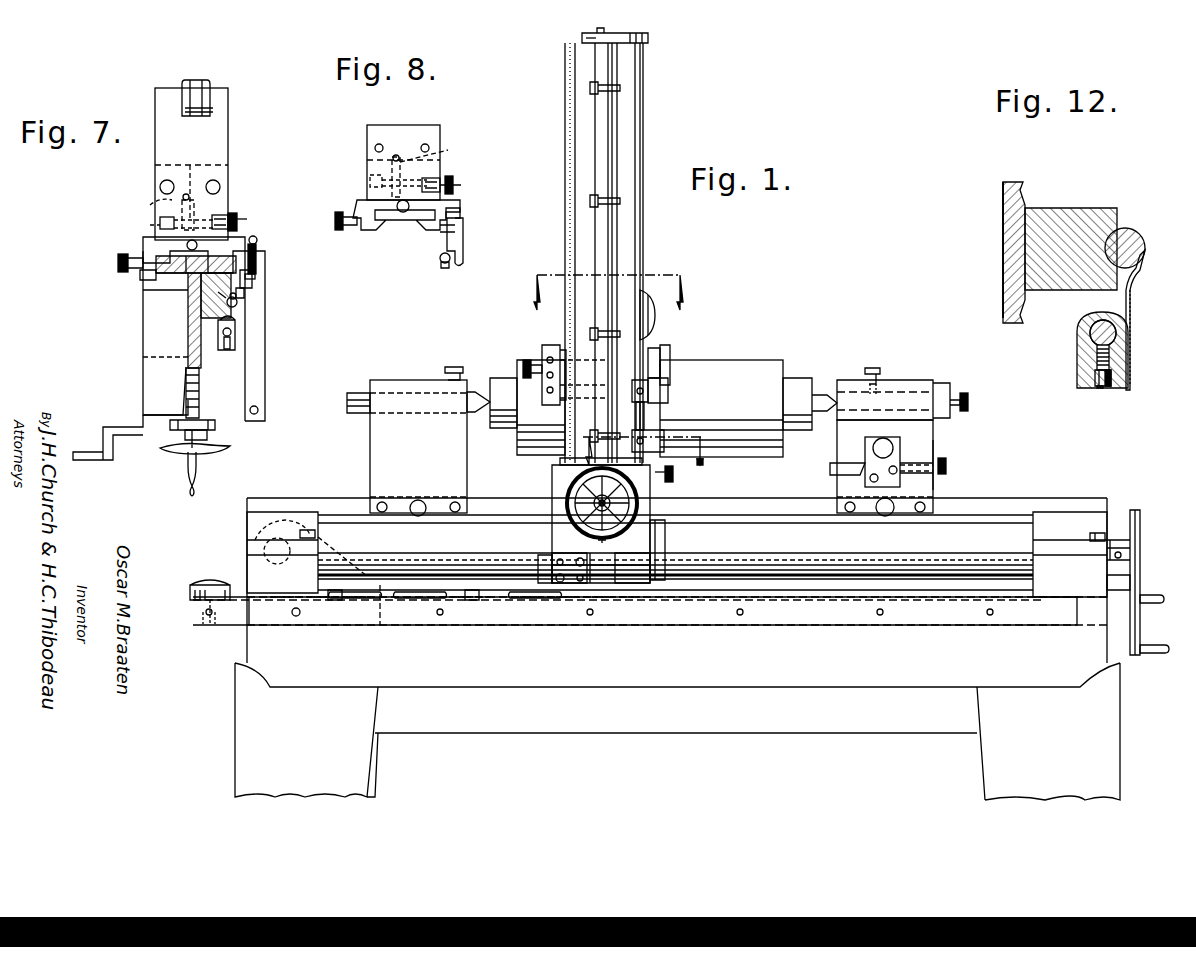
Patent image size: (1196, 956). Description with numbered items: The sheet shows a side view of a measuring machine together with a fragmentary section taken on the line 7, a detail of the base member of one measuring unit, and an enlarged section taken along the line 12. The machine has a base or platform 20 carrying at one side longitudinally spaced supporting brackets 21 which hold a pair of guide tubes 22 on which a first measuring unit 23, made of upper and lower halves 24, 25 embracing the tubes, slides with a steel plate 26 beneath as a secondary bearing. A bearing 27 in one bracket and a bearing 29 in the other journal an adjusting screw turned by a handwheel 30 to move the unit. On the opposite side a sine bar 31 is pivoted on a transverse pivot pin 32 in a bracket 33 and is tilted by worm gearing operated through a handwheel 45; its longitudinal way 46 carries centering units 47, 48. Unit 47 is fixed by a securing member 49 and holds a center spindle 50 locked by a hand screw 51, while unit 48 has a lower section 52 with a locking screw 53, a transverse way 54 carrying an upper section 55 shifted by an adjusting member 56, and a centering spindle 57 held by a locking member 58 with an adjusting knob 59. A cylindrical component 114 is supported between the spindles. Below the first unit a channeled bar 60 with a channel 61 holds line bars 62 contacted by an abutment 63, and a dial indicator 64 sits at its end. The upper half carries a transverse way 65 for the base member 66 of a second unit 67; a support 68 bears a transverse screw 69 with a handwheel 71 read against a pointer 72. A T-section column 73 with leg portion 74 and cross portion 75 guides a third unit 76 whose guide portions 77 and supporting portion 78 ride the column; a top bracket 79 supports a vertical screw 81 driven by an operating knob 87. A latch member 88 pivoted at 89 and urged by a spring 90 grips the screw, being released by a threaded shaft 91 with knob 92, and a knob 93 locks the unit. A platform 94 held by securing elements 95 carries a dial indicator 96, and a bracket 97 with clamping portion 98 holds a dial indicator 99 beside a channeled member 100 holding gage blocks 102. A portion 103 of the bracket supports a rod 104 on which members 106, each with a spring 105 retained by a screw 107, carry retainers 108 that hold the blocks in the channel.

In FIG. 1, the section line 7— 7 is at (607, 281).
In FIG. 1, the section line 12— 12 is at (639, 439).
In FIG. 1, the base or platform 20 is at (1115, 690).
In FIG. 1, the supporting brackets 21 is at (255, 523).
In FIG. 1, the guide members or tubes 22 is at (1043, 575).
In FIG. 7, the first measuring unit 23 is at (267, 387).
In FIG. 1, the first measuring unit 23 is at (630, 580).
In FIG. 1, the upper half of first measuring unit 24 is at (560, 540).
In FIG. 1, the lower half of first measuring unit 25 is at (622, 610).
In FIG. 1, the steel plate 26 is at (995, 600).
In FIG. 1, the bearing 27 is at (1091, 512).
In FIG. 1, the bearing 29 is at (282, 513).
In FIG. 1, the handwheel 30 is at (1140, 522).
In FIG. 1, the sine bar 31 is at (1026, 498).
In FIG. 1, the transverse pivot pin 32 is at (278, 567).
In FIG. 1, the bracket 33 is at (325, 535).
In FIG. 1, the handwheel 45 is at (1152, 627).
In FIG. 1, the longitudinal way 46 is at (1001, 498).
In FIG. 1, the centering unit 47 is at (464, 445).
In FIG. 1, the centering unit 48 is at (837, 483).
In FIG. 1, the securing member 49 is at (418, 505).
In FIG. 1, the center spindle 50 is at (478, 397).
In FIG. 1, the hand screw 51 is at (455, 367).
In FIG. 1, the lower section of centering unit 52 is at (938, 487).
In FIG. 1, the locking screw 53 is at (885, 515).
In FIG. 1, the transverse way 54 is at (833, 462).
In FIG. 1, the upper section of centering unit 55 is at (910, 385).
In FIG. 1, the adjusting member 56 is at (893, 445).
In FIG. 1, the centering spindle 57 is at (820, 397).
In FIG. 1, the locking member 58 is at (874, 367).
In FIG. 1, the adjusting knob 59 is at (970, 399).
In FIG. 1, the bar or member 60 is at (350, 623).
In FIG. 1, the channel 61 is at (418, 610).
In FIG. 1, the line bars 62 is at (433, 592).
In FIG. 7, the abutment or extension 63 is at (125, 458).
In FIG. 1, the abutment or extension 63 is at (510, 607).
In FIG. 1, the dial indicator 64 is at (210, 583).
In FIG. 1, the transverse way 65 is at (575, 505).
In FIG. 1, the base member 66 is at (567, 491).
In FIG. 7, the second measuring unit 67 is at (152, 376).
In FIG. 7, the support or bracket 68 is at (172, 420).
In FIG. 7, the adjusting shaft or screw 69 is at (200, 402).
In FIG. 7, the handwheel 71 is at (220, 451).
In FIG. 1, the handwheel 71 is at (655, 487).
In FIG. 7, the pointer 72 is at (212, 433).
In FIG. 1, the pointer 72 is at (560, 470).
In FIG. 7, the vertical columnar structure 73 is at (187, 338).
In FIG. 1, the vertical columnar structure 73 is at (565, 125).
In FIG. 12, the vertical columnar structure 73 is at (997, 241).
In FIG. 7, the leg portion of column 74 is at (143, 358).
In FIG. 1, the leg portion of column 74 is at (595, 66).
In FIG. 12, the leg portion of column 74 is at (1002, 195).
In FIG. 7, the cross portion of column 75 is at (145, 252).
In FIG. 1, the cross portion of column 75 is at (570, 158).
In FIG. 8, the third measuring unit 76 is at (363, 141).
In FIG. 1, the third measuring unit 76 is at (548, 387).
In FIG. 7, the guide portions 77 is at (138, 275).
In FIG. 8, the guide portions 77 is at (428, 238).
In FIG. 1, the guide portions 77 is at (550, 347).
In FIG. 8, the supporting portion 78 is at (440, 137).
In FIG. 1, the bracket 79 is at (582, 36).
In FIG. 7, the vertical threaded shaft or screw 81 is at (174, 275).
In FIG. 7, the operating knob 87 is at (256, 269).
In FIG. 1, the operating knob 87 is at (673, 473).
In FIG. 7, the latch member 88 is at (150, 207).
In FIG. 8, the latch member 88 is at (437, 149).
In FIG. 7, the pivot 89 is at (190, 186).
In FIG. 8, the pivot 89 is at (396, 157).
In FIG. 7, the compression spring 90 is at (150, 222).
In FIG. 8, the compression spring 90 is at (370, 173).
In FIG. 7, the release member or threaded shaft 91 is at (228, 219).
In FIG. 8, the release member or threaded shaft 91 is at (448, 182).
In FIG. 7, the operating knob 92 is at (237, 220).
In FIG. 8, the operating knob 92 is at (461, 185).
In FIG. 7, the locking knob 93 is at (118, 263).
In FIG. 8, the locking knob 93 is at (338, 216).
In FIG. 1, the locking knob 93 is at (528, 362).
In FIG. 7, the platform 94 is at (223, 88).
In FIG. 7, the securing elements 95 is at (160, 190).
In FIG. 7, the dial indicator 96 is at (199, 78).
In FIG. 7, the supporting bracket 97 is at (256, 247).
In FIG. 8, the supporting bracket 97 is at (463, 208).
In FIG. 1, the supporting bracket 97 is at (655, 348).
In FIG. 7, the clamping portion 98 is at (247, 294).
In FIG. 8, the clamping portion 98 is at (463, 242).
In FIG. 1, the clamping portion 98 is at (668, 355).
In FIG. 7, the dial indicator 99 is at (238, 303).
In FIG. 1, the dial indicator 99 is at (653, 302).
In FIG. 7, the vertical channeled member 100 is at (186, 312).
In FIG. 1, the vertical channeled member 100 is at (628, 108).
In FIG. 12, the vertical channeled member 100 is at (1064, 213).
In FIG. 12, the gage blocks or line bars 102 is at (1142, 236).
In FIG. 1, the longitudinally directed portion 103 is at (648, 37).
In FIG. 7, the bar or rod 104 is at (233, 330).
In FIG. 1, the bar or rod 104 is at (643, 65).
In FIG. 12, the bar or rod 104 is at (1088, 335).
In FIG. 12, the compression spring 105 is at (1096, 360).
In FIG. 7, the member 106 is at (233, 345).
In FIG. 1, the member 106 is at (644, 405).
In FIG. 12, the member 106 is at (1088, 383).
In FIG. 12, the screw 107 is at (1103, 387).
In FIG. 7, the retainer 108 is at (238, 310).
In FIG. 1, the retainer 108 is at (648, 393).
In FIG. 12, the retainer 108 is at (1134, 310).
In FIG. 1, the cylindrical component 114 is at (755, 367).